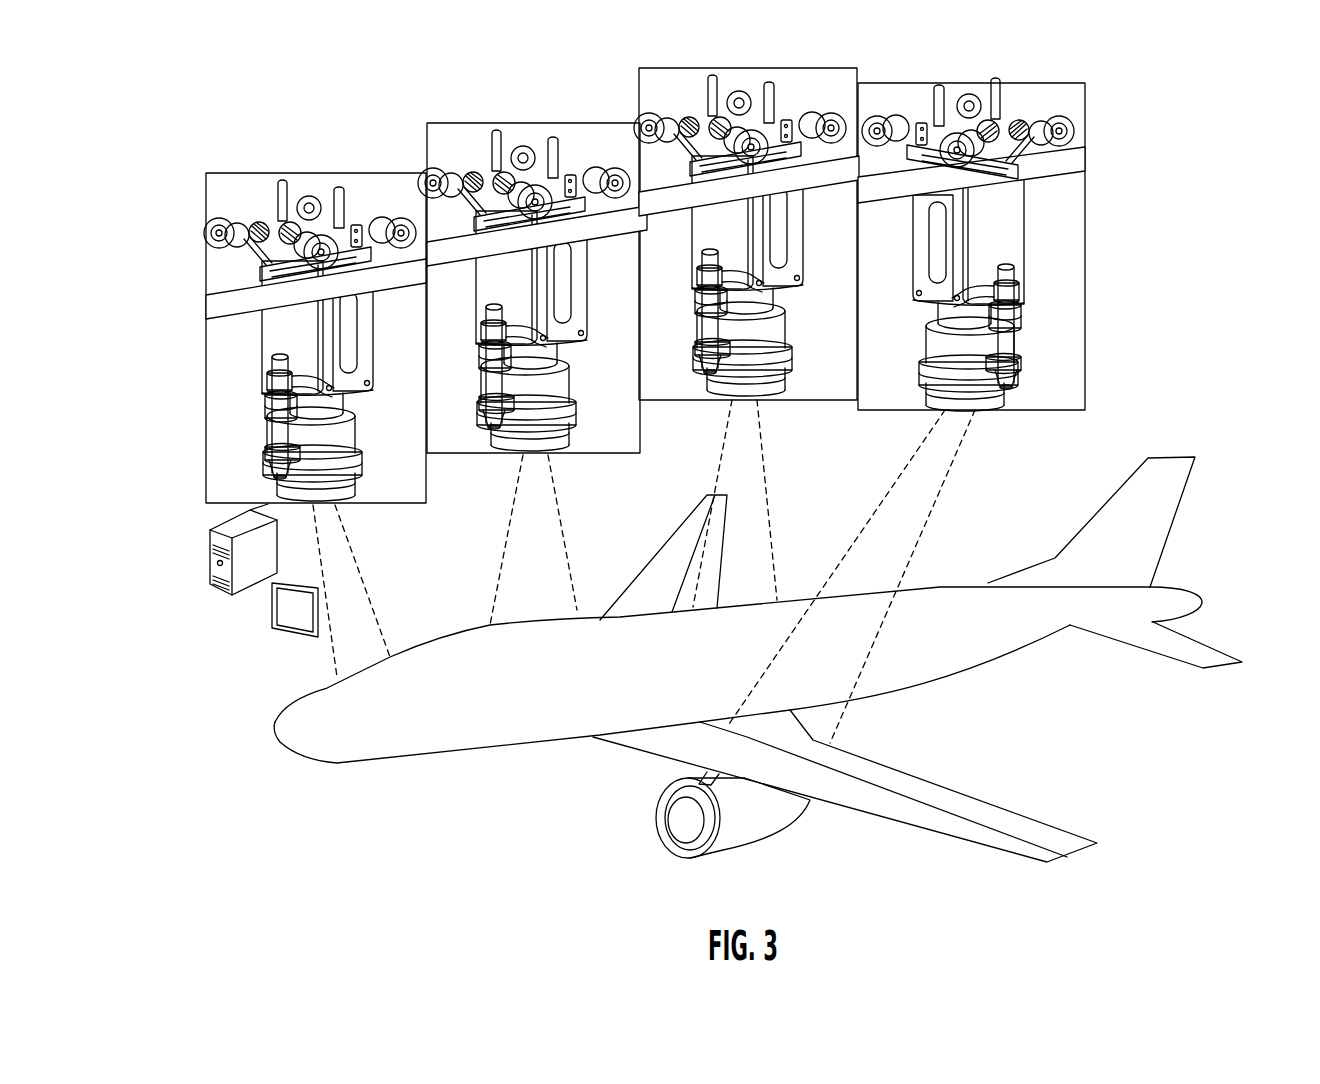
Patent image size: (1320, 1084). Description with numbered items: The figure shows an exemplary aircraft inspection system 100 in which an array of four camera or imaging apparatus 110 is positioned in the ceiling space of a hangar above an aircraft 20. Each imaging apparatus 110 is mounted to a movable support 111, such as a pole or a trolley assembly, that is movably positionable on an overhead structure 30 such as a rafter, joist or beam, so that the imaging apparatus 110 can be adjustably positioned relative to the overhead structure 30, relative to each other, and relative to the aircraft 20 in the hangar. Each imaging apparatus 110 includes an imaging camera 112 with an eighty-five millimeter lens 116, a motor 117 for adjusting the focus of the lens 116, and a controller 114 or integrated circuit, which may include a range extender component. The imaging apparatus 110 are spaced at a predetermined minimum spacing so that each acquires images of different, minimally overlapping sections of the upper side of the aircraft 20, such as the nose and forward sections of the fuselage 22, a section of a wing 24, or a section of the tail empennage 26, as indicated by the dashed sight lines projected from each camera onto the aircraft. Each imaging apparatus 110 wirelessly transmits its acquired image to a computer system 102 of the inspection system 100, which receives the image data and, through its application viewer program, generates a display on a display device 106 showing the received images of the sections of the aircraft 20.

The aircraft inspection system 100 is at (427, 81).
The imaging apparatus 110 is at (673, 319).
The movable support 111 is at (1077, 120).
The controller 114 is at (997, 243).
The motor 117 is at (1013, 315).
The imaging camera 112 is at (958, 347).
The lens 116 is at (1003, 393).
The overhead structure 30 is at (1052, 183).
The aircraft 20 is at (749, 658).
The fuselage 22 is at (490, 738).
The wing 24 is at (747, 737).
The tail empennage 26 is at (1092, 520).
The computer system 102 is at (208, 562).
The display device 106 is at (302, 628).